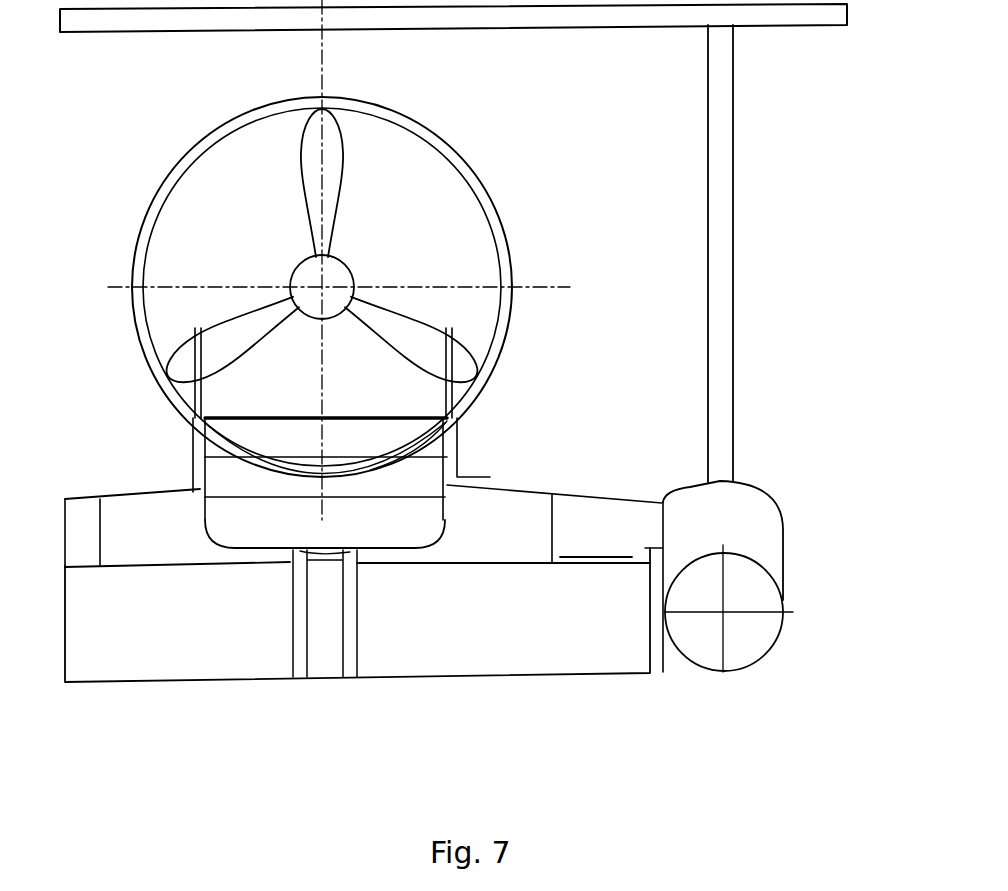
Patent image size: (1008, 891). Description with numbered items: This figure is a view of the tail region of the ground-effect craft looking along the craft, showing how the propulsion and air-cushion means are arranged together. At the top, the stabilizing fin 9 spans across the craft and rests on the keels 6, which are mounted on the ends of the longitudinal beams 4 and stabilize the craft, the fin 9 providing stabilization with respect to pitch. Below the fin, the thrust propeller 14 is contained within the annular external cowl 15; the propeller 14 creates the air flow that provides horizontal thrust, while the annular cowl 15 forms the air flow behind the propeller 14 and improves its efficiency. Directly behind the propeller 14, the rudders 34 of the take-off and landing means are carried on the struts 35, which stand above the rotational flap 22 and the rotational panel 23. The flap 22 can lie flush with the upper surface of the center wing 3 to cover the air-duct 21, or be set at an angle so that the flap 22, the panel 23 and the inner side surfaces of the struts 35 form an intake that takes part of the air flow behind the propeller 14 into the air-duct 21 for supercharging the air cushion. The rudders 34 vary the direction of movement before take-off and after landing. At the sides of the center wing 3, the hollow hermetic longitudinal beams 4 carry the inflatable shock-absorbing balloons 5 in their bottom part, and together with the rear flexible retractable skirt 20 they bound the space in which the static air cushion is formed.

The stabilizing fin 9 is at (763, 20).
The keel 6 is at (720, 222).
The annular external cowl 15 is at (452, 160).
The thrust propeller 14 is at (317, 207).
The rudder of take-off and landing means 34 is at (132, 287).
The strut 35 is at (195, 437).
The rotational panel 23 is at (393, 435).
The rotational flap 22 is at (402, 467).
The center wing 3 is at (182, 488).
The air-duct 21 is at (215, 520).
The rear flexible retractable skirt 20 is at (537, 635).
The longitudinal beam 4 is at (747, 530).
The inflatable shock-absorbing balloon 5 is at (758, 627).